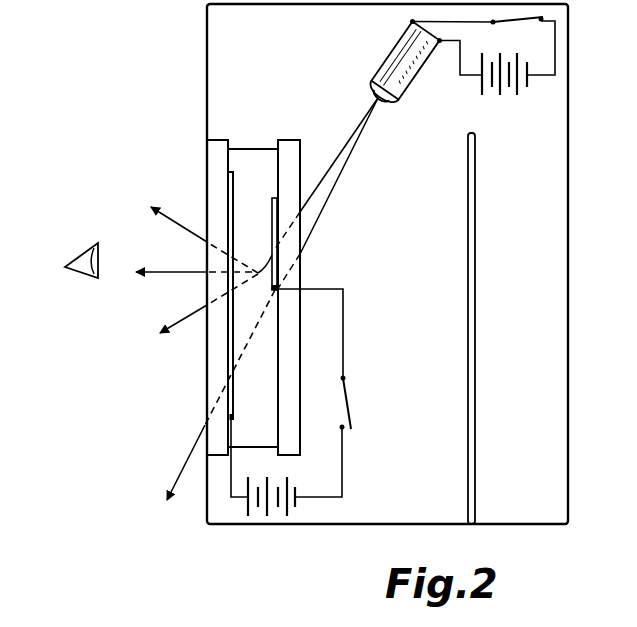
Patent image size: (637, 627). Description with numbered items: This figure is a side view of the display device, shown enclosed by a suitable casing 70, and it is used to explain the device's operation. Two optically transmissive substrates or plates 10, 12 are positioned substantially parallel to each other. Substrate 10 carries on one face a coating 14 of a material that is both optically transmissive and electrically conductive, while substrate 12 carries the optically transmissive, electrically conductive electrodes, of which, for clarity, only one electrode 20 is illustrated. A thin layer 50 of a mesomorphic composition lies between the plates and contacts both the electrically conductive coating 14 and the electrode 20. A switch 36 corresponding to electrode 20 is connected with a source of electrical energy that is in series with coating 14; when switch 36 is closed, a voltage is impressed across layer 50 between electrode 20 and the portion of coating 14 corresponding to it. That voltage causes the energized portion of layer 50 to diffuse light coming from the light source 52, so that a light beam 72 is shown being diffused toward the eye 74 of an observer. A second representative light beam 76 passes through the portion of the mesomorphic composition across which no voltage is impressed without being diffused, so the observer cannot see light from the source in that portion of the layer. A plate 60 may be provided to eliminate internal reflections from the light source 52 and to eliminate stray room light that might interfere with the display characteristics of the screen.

The substrate 10 is at (218, 386).
The substrate 12 is at (290, 277).
The coating 14 is at (229, 362).
The electrode 20 is at (278, 208).
The switch 36 is at (347, 396).
The thin layer of mesomorphic composition 50 is at (257, 165).
The light source 52 is at (403, 52).
The plate 60 is at (475, 253).
The casing 70 is at (568, 303).
The light beam 72 is at (362, 120).
The eye 74 is at (83, 258).
The light beam 76 is at (335, 186).